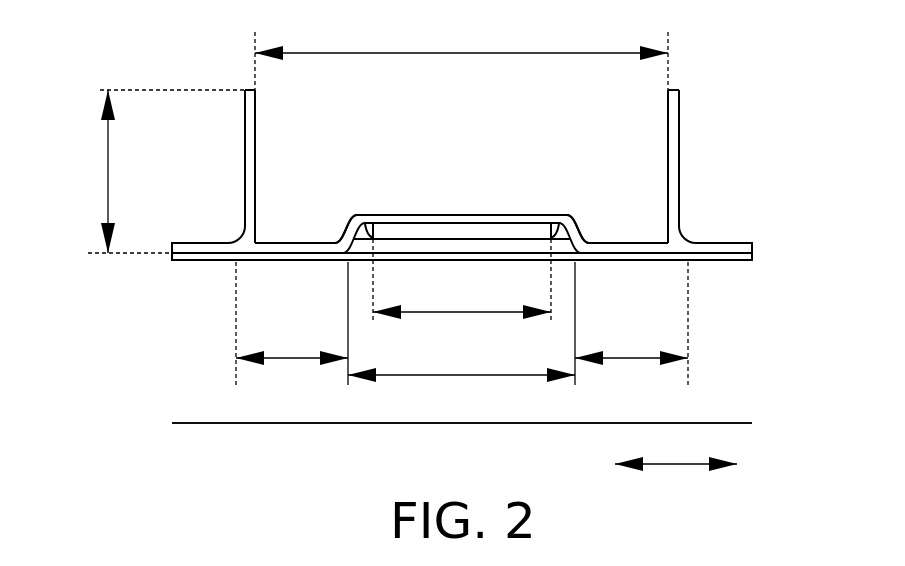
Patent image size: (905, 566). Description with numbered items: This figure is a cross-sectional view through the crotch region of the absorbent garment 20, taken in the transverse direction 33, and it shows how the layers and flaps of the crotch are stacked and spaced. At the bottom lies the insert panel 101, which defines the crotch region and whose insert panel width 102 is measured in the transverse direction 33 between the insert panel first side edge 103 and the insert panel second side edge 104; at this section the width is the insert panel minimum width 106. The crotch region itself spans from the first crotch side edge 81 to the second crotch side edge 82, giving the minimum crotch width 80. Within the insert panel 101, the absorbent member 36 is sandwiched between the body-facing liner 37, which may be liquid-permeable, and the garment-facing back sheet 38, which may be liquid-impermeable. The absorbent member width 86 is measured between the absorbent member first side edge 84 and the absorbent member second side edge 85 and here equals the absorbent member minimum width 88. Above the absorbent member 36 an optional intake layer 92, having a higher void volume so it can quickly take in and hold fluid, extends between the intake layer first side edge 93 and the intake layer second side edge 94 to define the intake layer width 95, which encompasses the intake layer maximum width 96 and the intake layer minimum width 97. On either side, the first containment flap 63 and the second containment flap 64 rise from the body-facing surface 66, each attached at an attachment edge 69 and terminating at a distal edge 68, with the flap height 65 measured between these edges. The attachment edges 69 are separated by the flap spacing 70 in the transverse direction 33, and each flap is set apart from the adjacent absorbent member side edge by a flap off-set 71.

The absorbent garment 20 is at (755, 168).
The transverse direction 33 is at (672, 466).
The absorbent member 36 is at (530, 247).
The liner 37 is at (473, 213).
The back sheet 38 is at (708, 262).
The first containment flap 63 is at (246, 122).
The second containment flap 64 is at (677, 125).
The flap height 65 is at (105, 165).
The body-facing surface 66 is at (225, 190).
The distal edge 68 is at (247, 88).
The attachment edge 69 is at (282, 225).
The flap spacing 70 is at (436, 52).
The flap off-set 71 is at (282, 362).
The minimum crotch width 80 is at (752, 262).
The first crotch side edge 81 is at (170, 253).
The second crotch side edge 82 is at (753, 246).
The absorbent member first side edge 84 is at (337, 248).
The absorbent member second side edge 85 is at (585, 252).
The absorbent member width 86 is at (428, 378).
The absorbent member minimum width 88 is at (461, 393).
The intake layer 92 is at (413, 227).
The intake layer first side edge 93 is at (365, 225).
The intake layer second side edge 94 is at (570, 227).
The intake layer width 95 is at (463, 299).
The intake layer maximum width 96 is at (463, 299).
The intake layer minimum width 97 is at (415, 315).
The insert panel 101 is at (181, 243).
The insert panel width 102 is at (300, 425).
The insert panel first side edge 103 is at (168, 257).
The insert panel second side edge 104 is at (753, 258).
The insert panel minimum width 106 is at (385, 427).